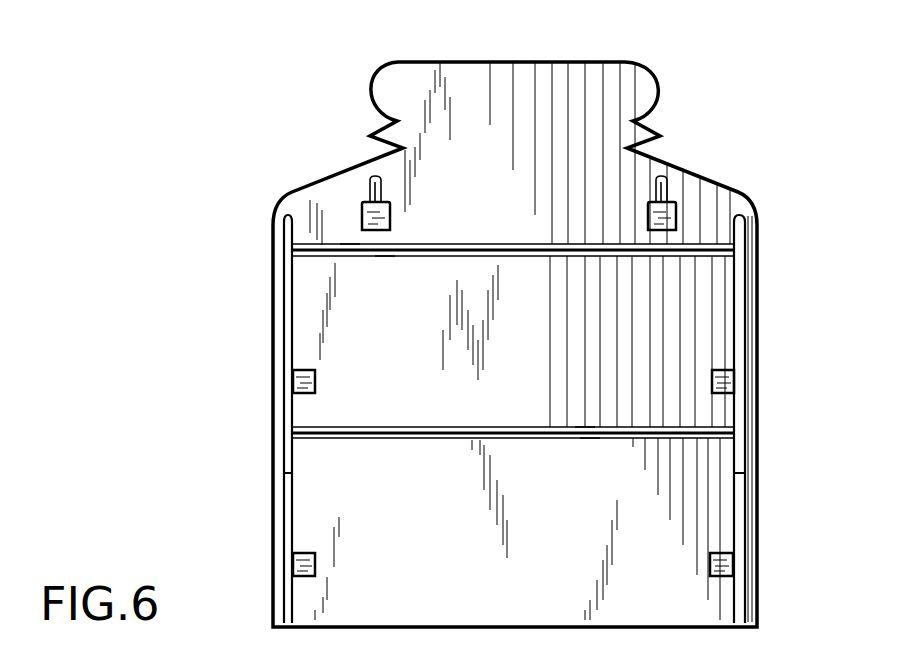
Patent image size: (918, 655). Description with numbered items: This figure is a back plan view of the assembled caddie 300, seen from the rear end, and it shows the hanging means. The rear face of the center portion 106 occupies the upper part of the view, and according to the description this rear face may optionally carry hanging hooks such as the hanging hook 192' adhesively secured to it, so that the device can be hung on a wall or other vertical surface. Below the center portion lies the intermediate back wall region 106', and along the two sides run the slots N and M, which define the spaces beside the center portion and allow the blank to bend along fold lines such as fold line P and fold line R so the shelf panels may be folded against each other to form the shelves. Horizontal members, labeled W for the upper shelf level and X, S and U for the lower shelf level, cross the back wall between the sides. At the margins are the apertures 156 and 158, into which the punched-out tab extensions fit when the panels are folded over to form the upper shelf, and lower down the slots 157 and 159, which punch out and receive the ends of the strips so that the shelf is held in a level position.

The liquid container assembly 300 is at (724, 63).
The center portion 106 is at (531, 342).
The intermediate wall portion 106' is at (522, 341).
The slot N is at (291, 275).
The slot M is at (737, 273).
The upper horizontal cross member W is at (482, 245).
The fold line P is at (350, 244).
The fold line R is at (382, 258).
The lower horizontal cross member X is at (390, 427).
The upper surface of lower cross member S is at (582, 427).
The lower surface of lower cross member U is at (590, 438).
The hanging hook 192' is at (703, 186).
The aperture 156 is at (303, 371).
The slot 157 is at (303, 554).
The aperture 158 is at (724, 370).
The slot 159 is at (720, 553).